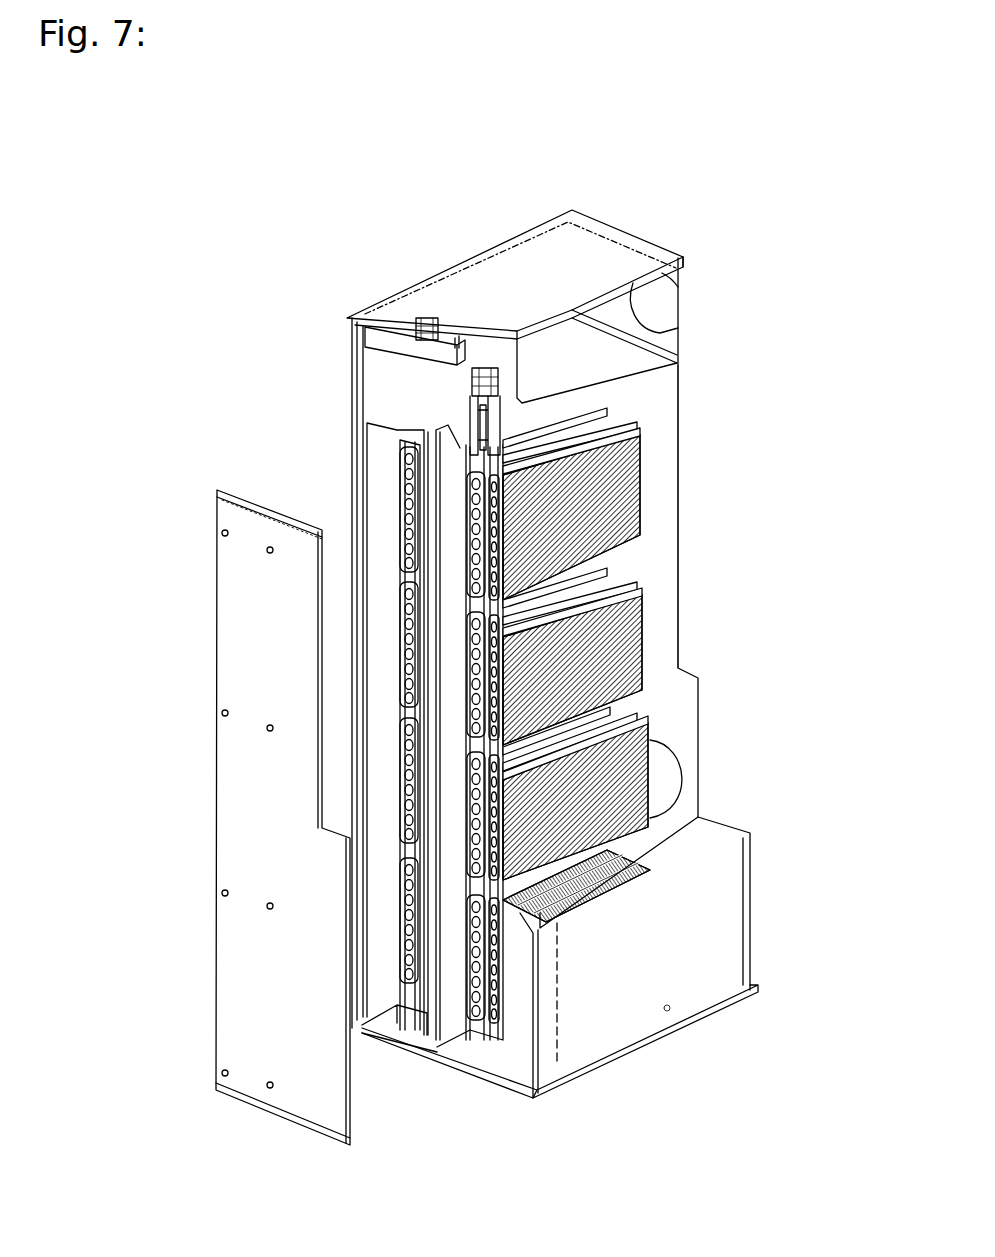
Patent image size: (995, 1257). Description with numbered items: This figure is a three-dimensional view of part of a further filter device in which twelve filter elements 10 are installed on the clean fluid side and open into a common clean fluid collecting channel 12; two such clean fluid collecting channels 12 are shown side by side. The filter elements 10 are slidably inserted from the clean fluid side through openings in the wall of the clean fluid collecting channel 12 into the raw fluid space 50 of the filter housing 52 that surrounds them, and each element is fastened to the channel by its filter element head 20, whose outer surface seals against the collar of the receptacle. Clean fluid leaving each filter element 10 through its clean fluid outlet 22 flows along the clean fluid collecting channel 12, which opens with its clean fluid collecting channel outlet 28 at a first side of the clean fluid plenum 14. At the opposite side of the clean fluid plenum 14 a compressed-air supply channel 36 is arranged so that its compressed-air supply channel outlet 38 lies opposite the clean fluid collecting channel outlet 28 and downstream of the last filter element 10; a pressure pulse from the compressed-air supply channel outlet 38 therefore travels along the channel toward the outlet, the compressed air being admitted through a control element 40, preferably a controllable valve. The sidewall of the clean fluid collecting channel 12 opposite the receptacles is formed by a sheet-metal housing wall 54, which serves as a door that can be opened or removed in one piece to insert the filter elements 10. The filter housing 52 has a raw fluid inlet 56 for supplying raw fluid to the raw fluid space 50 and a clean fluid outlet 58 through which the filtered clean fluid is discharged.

The filter element 10 is at (643, 613).
The clean fluid collecting channel 12 is at (395, 1040).
The clean fluid plenum 14 is at (567, 350).
The filter element head 20 is at (482, 1024).
The clean fluid outlet 22 is at (480, 1022).
The clean fluid collecting channel outlet 28 is at (455, 462).
The compressed-air supply channel 36 is at (488, 388).
The compressed-air supply channel outlet 38 is at (492, 417).
The control element 40 is at (414, 327).
The raw fluid space 50 is at (657, 692).
The filter housing 52 is at (695, 973).
The housing wall 54 is at (240, 952).
The raw fluid inlet 56 is at (673, 788).
The clean fluid outlet 58 is at (655, 306).